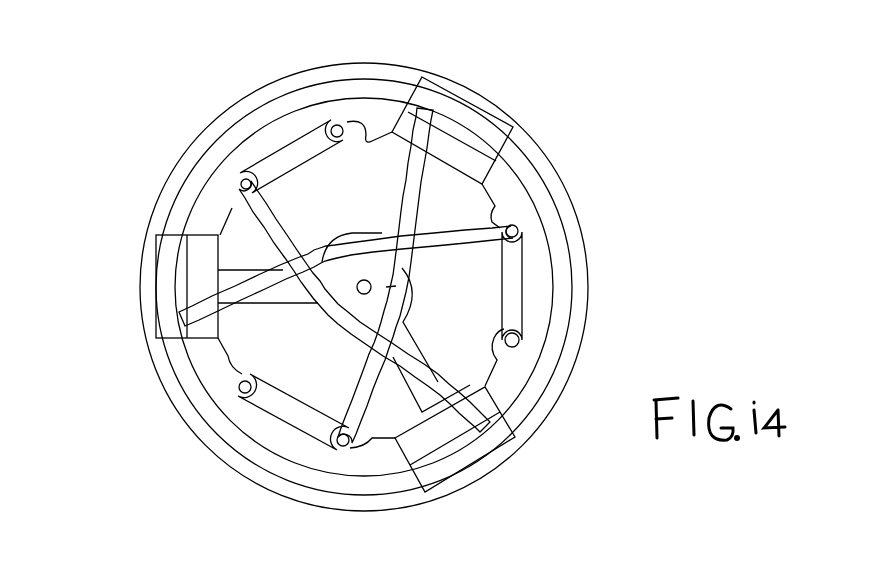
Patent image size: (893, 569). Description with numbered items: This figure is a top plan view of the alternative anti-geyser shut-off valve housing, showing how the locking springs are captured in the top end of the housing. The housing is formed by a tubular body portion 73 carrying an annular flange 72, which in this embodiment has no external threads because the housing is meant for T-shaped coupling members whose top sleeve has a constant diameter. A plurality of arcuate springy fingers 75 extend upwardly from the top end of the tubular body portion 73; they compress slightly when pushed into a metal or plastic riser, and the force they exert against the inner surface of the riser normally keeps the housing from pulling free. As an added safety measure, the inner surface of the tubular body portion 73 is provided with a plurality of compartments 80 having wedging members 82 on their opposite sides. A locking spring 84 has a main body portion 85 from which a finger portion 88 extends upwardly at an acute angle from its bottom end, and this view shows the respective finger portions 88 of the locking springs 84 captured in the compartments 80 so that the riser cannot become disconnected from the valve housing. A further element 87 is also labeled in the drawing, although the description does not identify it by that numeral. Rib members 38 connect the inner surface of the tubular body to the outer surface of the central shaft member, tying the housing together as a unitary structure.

The rib member 38 is at (271, 305).
The annular flange 72 is at (576, 318).
The tubular body portion 73 is at (538, 265).
The arcuate springy finger 75 is at (448, 142).
The compartment 80 is at (266, 165).
The wedging member 82 is at (362, 148).
The locking spring 84 is at (445, 250).
The main body portion 85 is at (366, 386).
The actuating arm 87 is at (417, 128).
The finger portion 88 is at (282, 404).